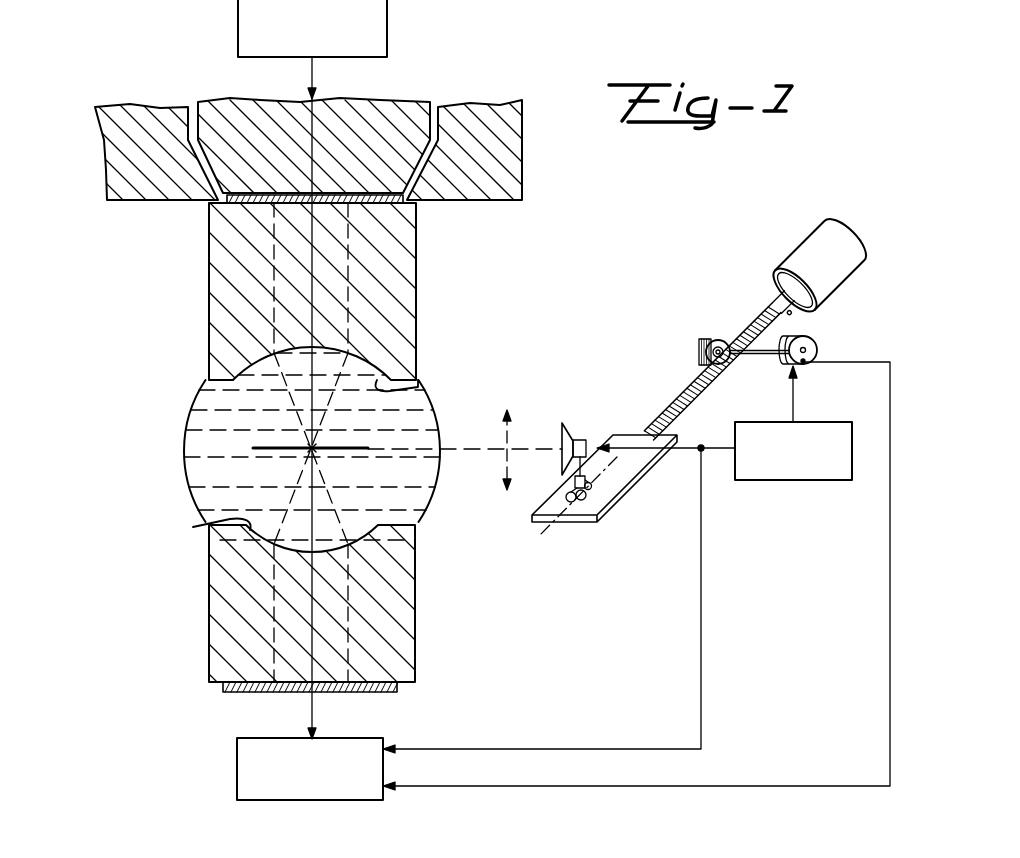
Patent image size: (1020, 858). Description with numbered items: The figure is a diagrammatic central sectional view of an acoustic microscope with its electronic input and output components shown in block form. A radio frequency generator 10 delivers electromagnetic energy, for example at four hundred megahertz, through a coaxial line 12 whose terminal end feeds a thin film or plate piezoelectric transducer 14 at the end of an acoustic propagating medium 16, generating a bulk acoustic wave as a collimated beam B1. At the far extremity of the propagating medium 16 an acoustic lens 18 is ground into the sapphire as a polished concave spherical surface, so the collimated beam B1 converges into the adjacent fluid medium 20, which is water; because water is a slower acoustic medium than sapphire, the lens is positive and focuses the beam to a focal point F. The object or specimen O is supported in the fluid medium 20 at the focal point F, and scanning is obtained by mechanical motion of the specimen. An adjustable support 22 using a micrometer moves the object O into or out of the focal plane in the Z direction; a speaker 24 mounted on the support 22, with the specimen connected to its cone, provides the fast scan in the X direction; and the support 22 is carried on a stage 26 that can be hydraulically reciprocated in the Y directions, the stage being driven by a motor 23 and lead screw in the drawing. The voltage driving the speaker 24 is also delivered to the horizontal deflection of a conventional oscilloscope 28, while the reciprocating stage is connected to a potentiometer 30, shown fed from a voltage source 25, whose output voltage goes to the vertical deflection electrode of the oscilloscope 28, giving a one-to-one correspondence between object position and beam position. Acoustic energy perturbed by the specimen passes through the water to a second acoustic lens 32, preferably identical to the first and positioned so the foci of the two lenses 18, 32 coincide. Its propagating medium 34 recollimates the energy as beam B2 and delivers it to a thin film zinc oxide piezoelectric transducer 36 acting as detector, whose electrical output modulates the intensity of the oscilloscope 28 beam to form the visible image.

The radio frequency generator 10 is at (238, 16).
The coaxial line 12 is at (240, 88).
The piezoelectric transducer 14 is at (230, 203).
The acoustic propagating medium 16 is at (217, 276).
The acoustic lens 18 is at (412, 388).
The fluid medium 20 is at (203, 490).
The adjustable support 22 is at (567, 469).
The motor 23 is at (803, 240).
The speaker 24 is at (563, 426).
The voltage source 25 is at (815, 480).
The stage 26 is at (613, 494).
The oscilloscope 28 is at (238, 772).
The potentiometer 30 is at (808, 338).
The acoustic lens 32 is at (230, 520).
The propagating medium 34 is at (213, 610).
The piezoelectric transducer 36 is at (258, 690).
The collimated acoustic beam B1 is at (348, 272).
The recollimated acoustic beam B2 is at (348, 580).
The focal point F is at (312, 448).
The object or specimen O is at (253, 447).
The X direction X is at (466, 455).
The Y direction Y is at (527, 548).
The Z direction Z is at (494, 428).